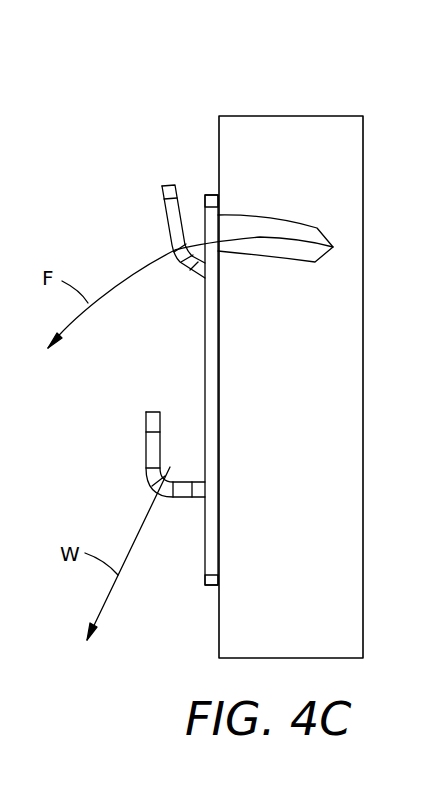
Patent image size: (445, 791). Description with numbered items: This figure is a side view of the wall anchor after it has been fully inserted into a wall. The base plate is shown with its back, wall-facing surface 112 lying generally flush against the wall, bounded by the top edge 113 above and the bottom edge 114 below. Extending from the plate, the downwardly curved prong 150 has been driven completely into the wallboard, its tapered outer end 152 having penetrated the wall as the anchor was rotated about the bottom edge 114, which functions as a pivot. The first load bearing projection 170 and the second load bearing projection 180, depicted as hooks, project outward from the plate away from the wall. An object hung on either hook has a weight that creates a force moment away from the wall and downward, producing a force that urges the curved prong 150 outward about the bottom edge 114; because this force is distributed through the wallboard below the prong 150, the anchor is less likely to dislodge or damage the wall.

The back, wall-facing surface 112 is at (219, 365).
The top edge 113 is at (211, 196).
The bottom edge 114 is at (210, 585).
The downwardly curved prong 150 is at (275, 218).
The outer end 152 is at (333, 247).
The first load bearing projection 170 is at (146, 452).
The second load bearing projection 180 is at (166, 230).